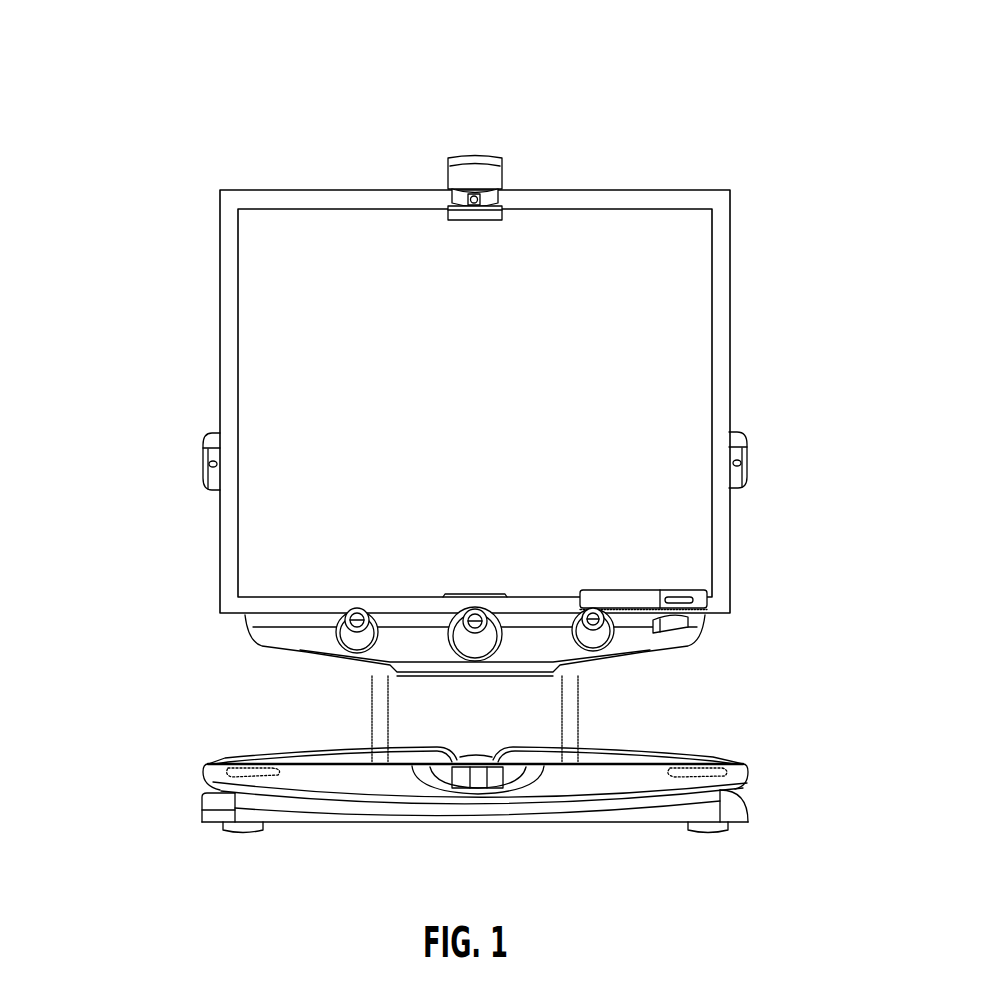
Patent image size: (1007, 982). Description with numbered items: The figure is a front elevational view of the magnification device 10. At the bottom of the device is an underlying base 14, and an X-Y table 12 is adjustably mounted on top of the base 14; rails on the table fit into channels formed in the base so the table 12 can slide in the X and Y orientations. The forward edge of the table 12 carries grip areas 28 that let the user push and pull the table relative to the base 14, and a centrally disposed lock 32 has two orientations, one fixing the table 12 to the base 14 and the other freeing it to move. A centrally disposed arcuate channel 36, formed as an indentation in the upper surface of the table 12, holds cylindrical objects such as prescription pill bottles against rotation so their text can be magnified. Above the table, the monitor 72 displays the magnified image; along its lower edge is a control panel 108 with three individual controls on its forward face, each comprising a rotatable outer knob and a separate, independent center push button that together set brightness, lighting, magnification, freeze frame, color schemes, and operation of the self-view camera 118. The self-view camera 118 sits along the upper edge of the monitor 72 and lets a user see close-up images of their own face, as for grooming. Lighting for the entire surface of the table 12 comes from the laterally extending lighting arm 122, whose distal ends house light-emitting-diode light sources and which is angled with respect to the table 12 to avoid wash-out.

The device 10 is at (712, 128).
The X-Y table 12 is at (624, 762).
The base 14 is at (738, 812).
The grip areas 28 is at (215, 763).
The lock 32 is at (484, 778).
The arcuate channel 36 is at (477, 756).
The monitor 72 is at (484, 417).
The control panel 108 is at (414, 592).
The self-view camera 118 is at (502, 172).
The lighting arm 122 is at (197, 458).